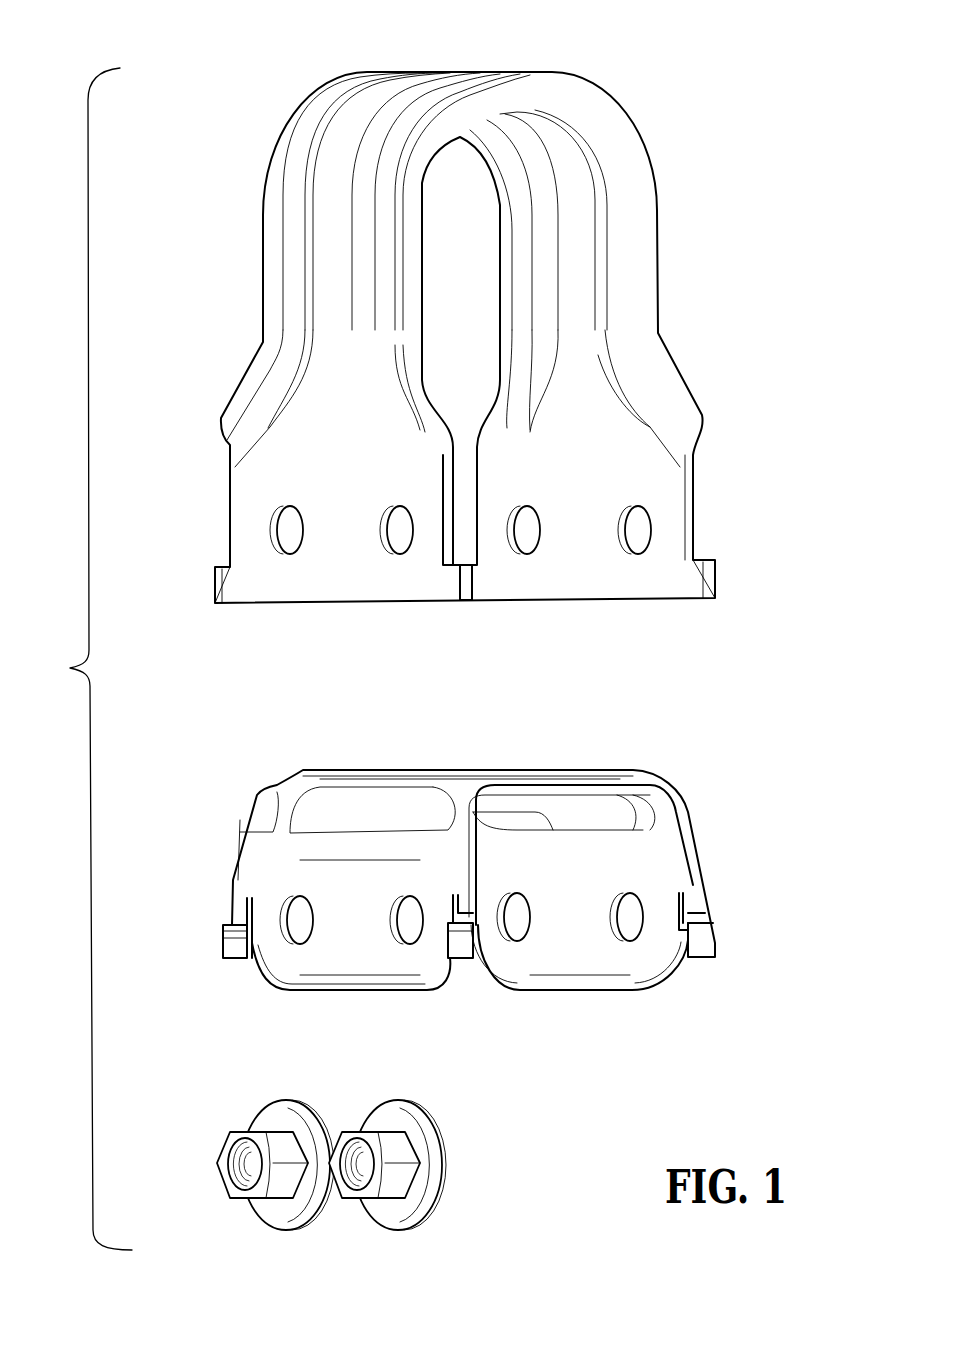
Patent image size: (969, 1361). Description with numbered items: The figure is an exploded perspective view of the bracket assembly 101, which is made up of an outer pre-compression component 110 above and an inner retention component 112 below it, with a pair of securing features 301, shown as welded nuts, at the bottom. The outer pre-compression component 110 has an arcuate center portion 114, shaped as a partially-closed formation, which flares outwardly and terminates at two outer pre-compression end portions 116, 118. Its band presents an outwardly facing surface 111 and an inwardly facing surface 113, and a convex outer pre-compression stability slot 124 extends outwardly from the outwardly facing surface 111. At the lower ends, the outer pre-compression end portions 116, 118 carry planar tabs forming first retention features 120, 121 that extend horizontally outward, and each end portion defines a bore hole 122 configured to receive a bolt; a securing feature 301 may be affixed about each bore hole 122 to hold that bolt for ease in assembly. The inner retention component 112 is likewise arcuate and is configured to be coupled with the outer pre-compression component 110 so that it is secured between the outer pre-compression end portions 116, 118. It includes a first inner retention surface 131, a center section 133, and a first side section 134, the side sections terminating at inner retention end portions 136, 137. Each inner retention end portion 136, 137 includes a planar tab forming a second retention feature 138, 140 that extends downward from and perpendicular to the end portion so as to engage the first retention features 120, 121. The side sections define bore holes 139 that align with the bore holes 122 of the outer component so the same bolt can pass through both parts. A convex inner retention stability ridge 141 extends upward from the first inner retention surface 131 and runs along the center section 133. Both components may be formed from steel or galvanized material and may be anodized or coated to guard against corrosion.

The bracket assembly 101 is at (79, 659).
The outer pre-compression component 110 is at (643, 115).
The outwardly facing surface 111 is at (398, 95).
The inner retention component 112 is at (713, 804).
The inwardly facing surface 113 is at (516, 258).
The center portion 114 is at (450, 65).
The outer pre-compression end portion 116 is at (248, 500).
The outer pre-compression end portion 118 is at (672, 495).
The first retention feature 120 is at (227, 585).
The first retention feature 121 is at (698, 573).
The bore hole 122 is at (653, 533).
The convex outer pre-compression stability slot 124 is at (333, 205).
The first inner retention surface 131 is at (313, 833).
The center section 133 is at (430, 770).
The first side section 134 is at (370, 899).
The inner retention end portion 136 is at (332, 993).
The inner retention end portion 137 is at (580, 990).
The second retention feature 138 is at (228, 955).
The bore hole 139 is at (292, 942).
The second retention feature 140 is at (717, 943).
The convex inner retention stability ridge 141 is at (333, 777).
The securing feature 301 is at (225, 1187).